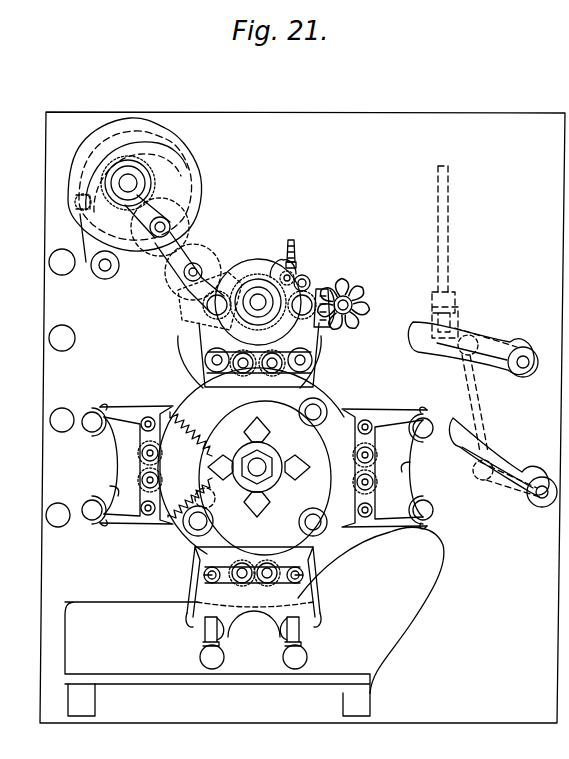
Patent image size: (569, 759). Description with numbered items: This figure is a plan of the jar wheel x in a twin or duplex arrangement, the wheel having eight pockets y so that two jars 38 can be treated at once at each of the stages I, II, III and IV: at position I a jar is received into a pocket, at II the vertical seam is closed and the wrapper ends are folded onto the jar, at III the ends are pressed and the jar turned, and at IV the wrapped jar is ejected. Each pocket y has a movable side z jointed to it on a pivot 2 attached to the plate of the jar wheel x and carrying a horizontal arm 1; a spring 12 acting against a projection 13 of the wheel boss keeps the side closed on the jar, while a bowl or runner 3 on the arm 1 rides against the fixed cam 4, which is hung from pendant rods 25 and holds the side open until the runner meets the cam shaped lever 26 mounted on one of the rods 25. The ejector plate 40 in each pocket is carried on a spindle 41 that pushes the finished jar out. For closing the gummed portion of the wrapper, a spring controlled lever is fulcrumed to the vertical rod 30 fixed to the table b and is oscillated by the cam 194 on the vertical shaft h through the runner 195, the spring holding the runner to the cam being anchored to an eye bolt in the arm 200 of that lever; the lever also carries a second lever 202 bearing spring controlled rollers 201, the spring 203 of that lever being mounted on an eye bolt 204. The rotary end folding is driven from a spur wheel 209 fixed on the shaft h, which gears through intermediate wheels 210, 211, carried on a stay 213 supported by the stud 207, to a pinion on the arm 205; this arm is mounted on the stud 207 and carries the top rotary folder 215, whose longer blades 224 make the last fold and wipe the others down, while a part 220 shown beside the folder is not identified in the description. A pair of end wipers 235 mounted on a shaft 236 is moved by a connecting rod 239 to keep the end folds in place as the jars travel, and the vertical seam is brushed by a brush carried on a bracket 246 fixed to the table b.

The cam 194 is at (172, 142).
The spur wheel 209 is at (150, 170).
The vertical shaft h is at (137, 183).
The runner 195 is at (75, 200).
The arm 200 is at (82, 232).
The vertical rod 30 is at (105, 272).
The jar 38 is at (62, 275).
The intermediate wheel 211 is at (172, 222).
The stay 213 is at (197, 262).
The intermediate wheel 210 is at (185, 300).
The arm 205 is at (250, 312).
The pendant rods 25 is at (213, 306).
The spring 203 is at (276, 243).
The lever 202 is at (277, 259).
The eye bolt 204 is at (297, 244).
The spring controlled rollers 201 is at (308, 280).
The stud 207 is at (326, 328).
The top rotary folder 215 is at (334, 314).
The blades 224 is at (358, 292).
The shaft 220 is at (352, 306).
The pivot 2 is at (312, 362).
The bowl or runner 3 is at (253, 372).
The horizontal projecting arm 1 is at (226, 583).
The spring 12 is at (190, 422).
The cam shaped lever 26 is at (201, 498).
The fixed cam 4 is at (322, 495).
The projections 13 is at (259, 467).
The jar wheel x is at (268, 455).
The movable side z is at (96, 409).
The pocket y is at (277, 475).
The spindle 41 is at (215, 640).
The ejector plate 40 is at (299, 640).
The bracket 246 is at (217, 659).
The connecting rod 239 is at (450, 216).
The end wipers 235 is at (485, 342).
The shaft 236 is at (523, 369).
The table b is at (506, 412).
The No. I position I is at (120, 465).
The No. II position II is at (269, 222).
The No. III position III is at (391, 468).
The No. IV position IV is at (253, 594).